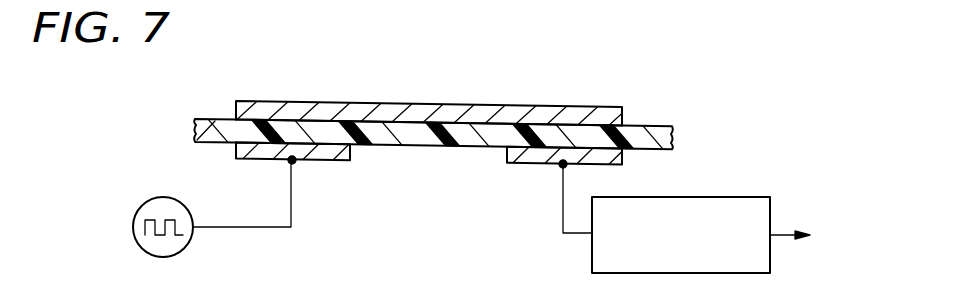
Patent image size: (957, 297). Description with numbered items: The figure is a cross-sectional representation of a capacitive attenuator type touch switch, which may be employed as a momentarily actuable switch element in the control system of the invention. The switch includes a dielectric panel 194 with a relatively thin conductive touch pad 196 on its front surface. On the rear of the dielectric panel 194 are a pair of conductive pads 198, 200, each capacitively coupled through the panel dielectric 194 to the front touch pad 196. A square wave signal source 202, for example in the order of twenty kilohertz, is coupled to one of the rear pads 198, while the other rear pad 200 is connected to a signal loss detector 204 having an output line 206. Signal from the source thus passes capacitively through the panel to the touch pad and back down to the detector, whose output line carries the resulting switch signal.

The dielectric panel 194 is at (660, 126).
The conductive touch pad 196 is at (603, 107).
The conductive pad 198 is at (337, 161).
The conductive pad 200 is at (507, 163).
The square wave signal source 202 is at (158, 197).
The signal loss detector 204 is at (707, 198).
The output line 206 is at (785, 233).